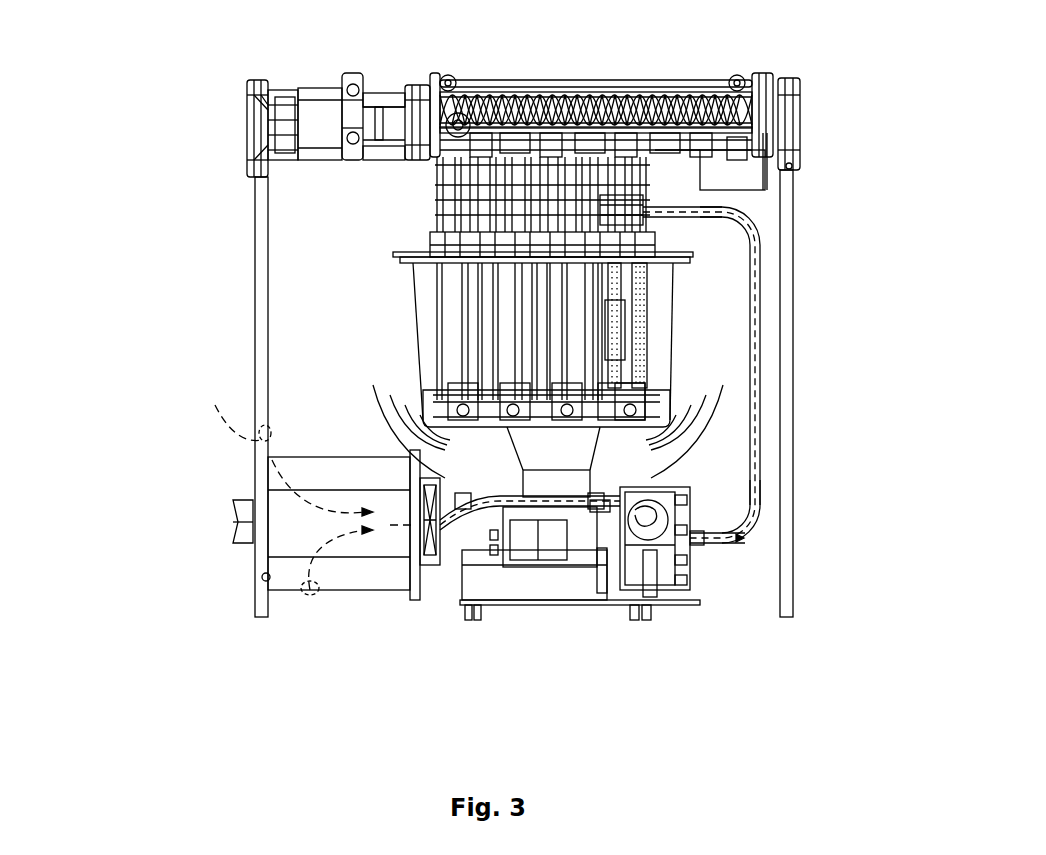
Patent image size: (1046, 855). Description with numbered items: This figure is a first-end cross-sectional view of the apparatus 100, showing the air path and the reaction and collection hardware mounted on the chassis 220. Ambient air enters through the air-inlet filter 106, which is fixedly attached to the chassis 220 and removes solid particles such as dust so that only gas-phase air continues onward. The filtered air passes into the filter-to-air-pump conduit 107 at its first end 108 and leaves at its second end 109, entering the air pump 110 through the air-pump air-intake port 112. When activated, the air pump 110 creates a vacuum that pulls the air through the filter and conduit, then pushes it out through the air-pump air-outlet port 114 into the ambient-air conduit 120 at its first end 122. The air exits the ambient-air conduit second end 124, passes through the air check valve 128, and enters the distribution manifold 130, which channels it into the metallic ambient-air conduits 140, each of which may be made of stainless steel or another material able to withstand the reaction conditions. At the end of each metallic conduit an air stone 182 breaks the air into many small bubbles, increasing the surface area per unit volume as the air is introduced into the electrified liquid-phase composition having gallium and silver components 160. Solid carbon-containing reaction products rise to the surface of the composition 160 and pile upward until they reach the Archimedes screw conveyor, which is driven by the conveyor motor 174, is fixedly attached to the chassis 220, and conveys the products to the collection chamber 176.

The apparatus 100 is at (162, 70).
The air-inlet filter 106 is at (290, 573).
The filter-to-air-pump conduit 107 is at (467, 520).
The filter-to-air-pump-conduit first end 108 is at (450, 540).
The filter-to-air-pump-conduit second end 109 is at (600, 555).
The air pump 110 is at (618, 520).
The air-pump air-intake port 112 is at (602, 505).
The air-pump air-outlet port 114 is at (703, 545).
The ambient-air conduit 120 is at (763, 500).
The ambient-air-conduit first end 122 is at (740, 543).
The ambient-air-conduit second end 124 is at (687, 215).
The air check valve 128 is at (650, 127).
The distribution manifold 130 is at (717, 212).
The metallic ambient-air conduit 140 is at (633, 300).
The electrified liquid-phase composition having gallium and silver components 160 is at (643, 347).
The conveyor motor 174 is at (320, 132).
The collection chamber 176 is at (743, 190).
The air stone 182 is at (640, 385).
The chassis 220 is at (788, 167).